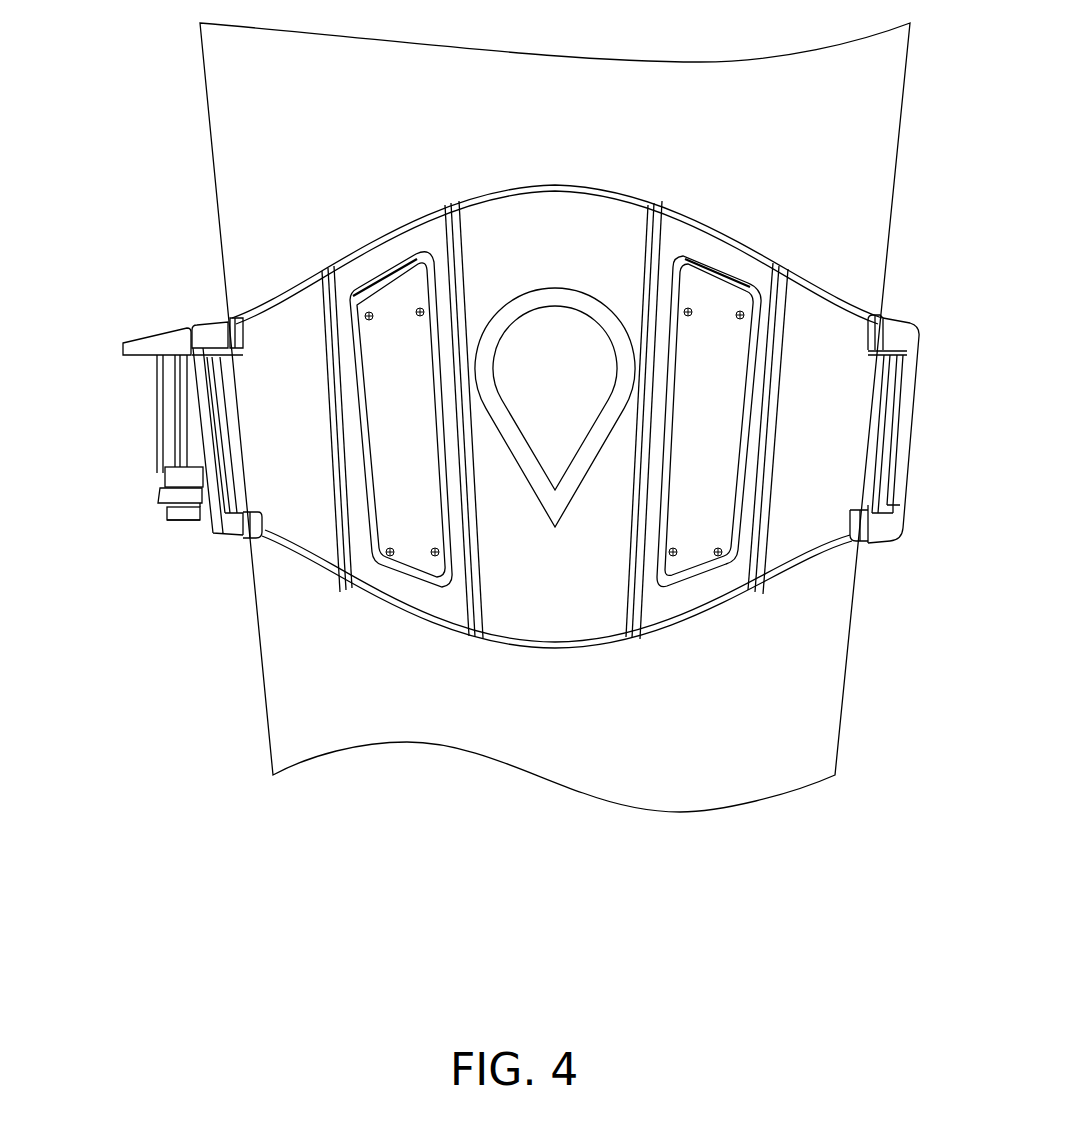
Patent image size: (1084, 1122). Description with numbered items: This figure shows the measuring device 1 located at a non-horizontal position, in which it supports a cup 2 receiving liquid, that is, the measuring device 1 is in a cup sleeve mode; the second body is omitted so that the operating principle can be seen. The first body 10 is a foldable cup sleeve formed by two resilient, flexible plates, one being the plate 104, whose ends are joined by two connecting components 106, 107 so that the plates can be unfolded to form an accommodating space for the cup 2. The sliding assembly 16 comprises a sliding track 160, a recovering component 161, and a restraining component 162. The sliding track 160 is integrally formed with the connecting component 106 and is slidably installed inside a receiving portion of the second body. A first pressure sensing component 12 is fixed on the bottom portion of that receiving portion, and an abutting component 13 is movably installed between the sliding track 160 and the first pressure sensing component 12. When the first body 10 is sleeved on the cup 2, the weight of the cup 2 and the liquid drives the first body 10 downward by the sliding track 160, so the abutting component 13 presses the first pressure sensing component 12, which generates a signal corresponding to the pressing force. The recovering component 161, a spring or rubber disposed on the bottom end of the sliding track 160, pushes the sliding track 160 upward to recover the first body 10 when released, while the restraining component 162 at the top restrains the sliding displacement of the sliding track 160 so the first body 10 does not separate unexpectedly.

The measuring device 1 is at (930, 290).
The cup 2 is at (323, 141).
The first body 10 is at (808, 515).
The plate 104 is at (580, 608).
The connecting component 106 is at (211, 336).
The connecting component 107 is at (910, 418).
The first pressure sensing component 12 is at (187, 515).
The abutting component 13 is at (158, 497).
The sliding assembly 16 is at (130, 268).
The sliding track 160 is at (168, 414).
The recovering component 161 is at (167, 483).
The restraining component 162 is at (168, 347).